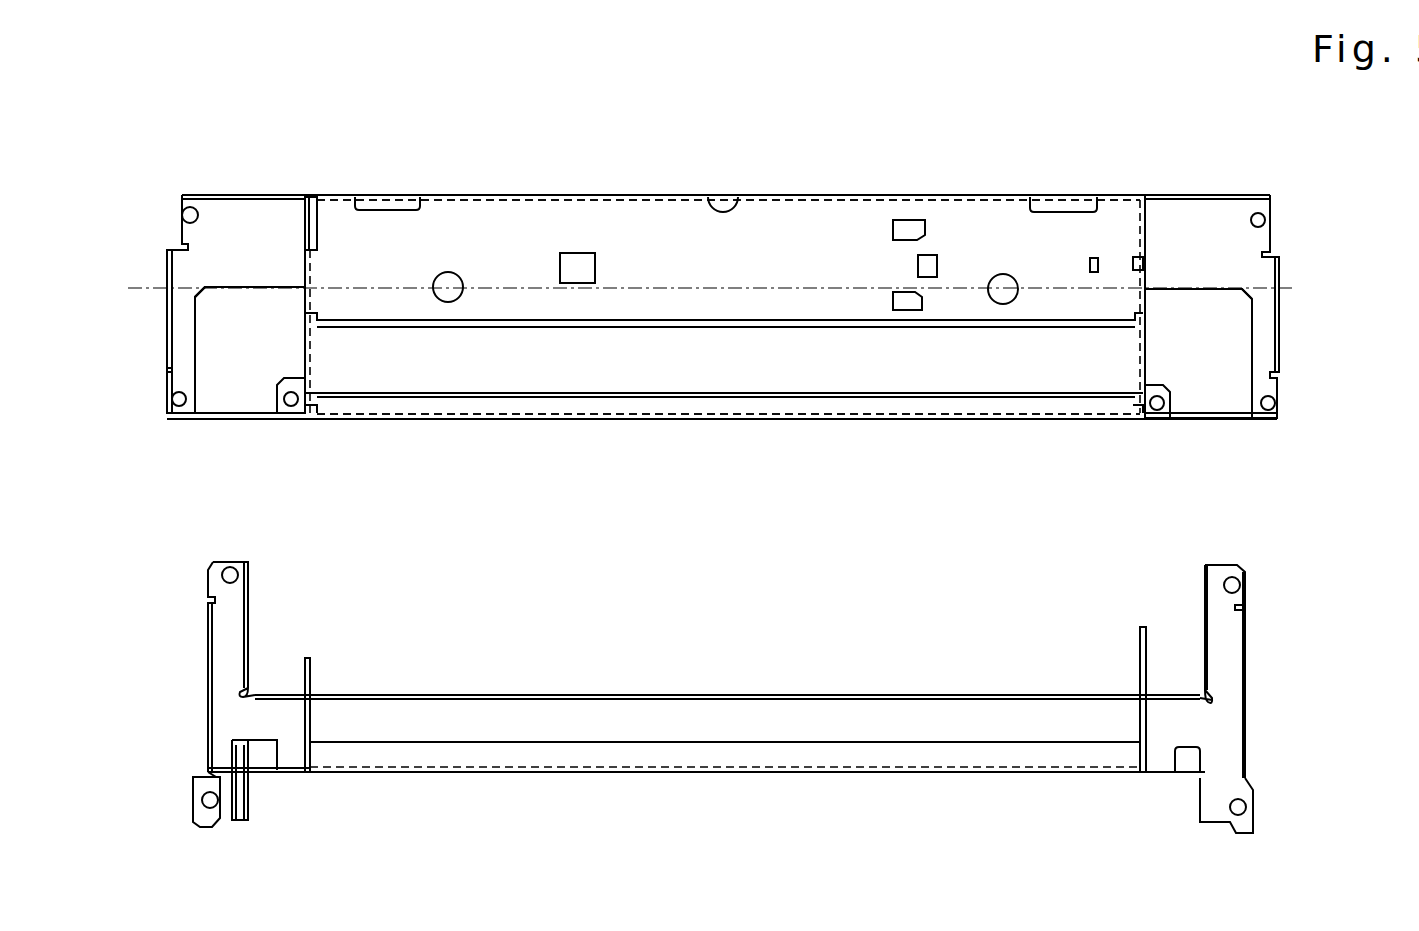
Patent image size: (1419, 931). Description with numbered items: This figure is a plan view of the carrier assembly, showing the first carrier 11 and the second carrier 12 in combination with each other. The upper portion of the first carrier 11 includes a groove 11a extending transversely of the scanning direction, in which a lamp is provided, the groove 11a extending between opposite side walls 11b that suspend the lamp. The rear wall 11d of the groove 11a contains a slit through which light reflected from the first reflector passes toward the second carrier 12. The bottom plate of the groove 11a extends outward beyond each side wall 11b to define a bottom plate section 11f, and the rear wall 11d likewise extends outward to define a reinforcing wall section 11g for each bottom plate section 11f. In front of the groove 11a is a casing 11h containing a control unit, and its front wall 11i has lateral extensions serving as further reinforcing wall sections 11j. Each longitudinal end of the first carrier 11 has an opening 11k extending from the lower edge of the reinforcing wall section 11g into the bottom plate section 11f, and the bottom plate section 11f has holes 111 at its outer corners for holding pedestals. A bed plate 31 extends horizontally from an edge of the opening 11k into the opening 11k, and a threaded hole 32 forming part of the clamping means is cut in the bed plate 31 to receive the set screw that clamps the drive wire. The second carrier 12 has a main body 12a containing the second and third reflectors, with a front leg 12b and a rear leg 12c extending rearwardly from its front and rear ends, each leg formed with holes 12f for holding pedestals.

The first carrier 11 is at (572, 190).
The groove 11a is at (730, 360).
The side walls 11b is at (309, 337).
The rear wall 11d is at (915, 420).
The bottom plate section 11f is at (265, 215).
The reinforcing wall section 11g is at (235, 418).
The casing 11h is at (475, 230).
The front wall 11i is at (930, 195).
The reinforcing wall sections 11j is at (1222, 195).
The opening 11k is at (220, 378).
The holes 111 is at (190, 210).
The bed plate 31 is at (283, 385).
The threaded hole 32 is at (291, 405).
The second carrier 12 is at (750, 758).
The main body 12a is at (680, 715).
The front leg 12b is at (235, 620).
The rear leg 12c is at (225, 810).
The holes 12f is at (228, 580).